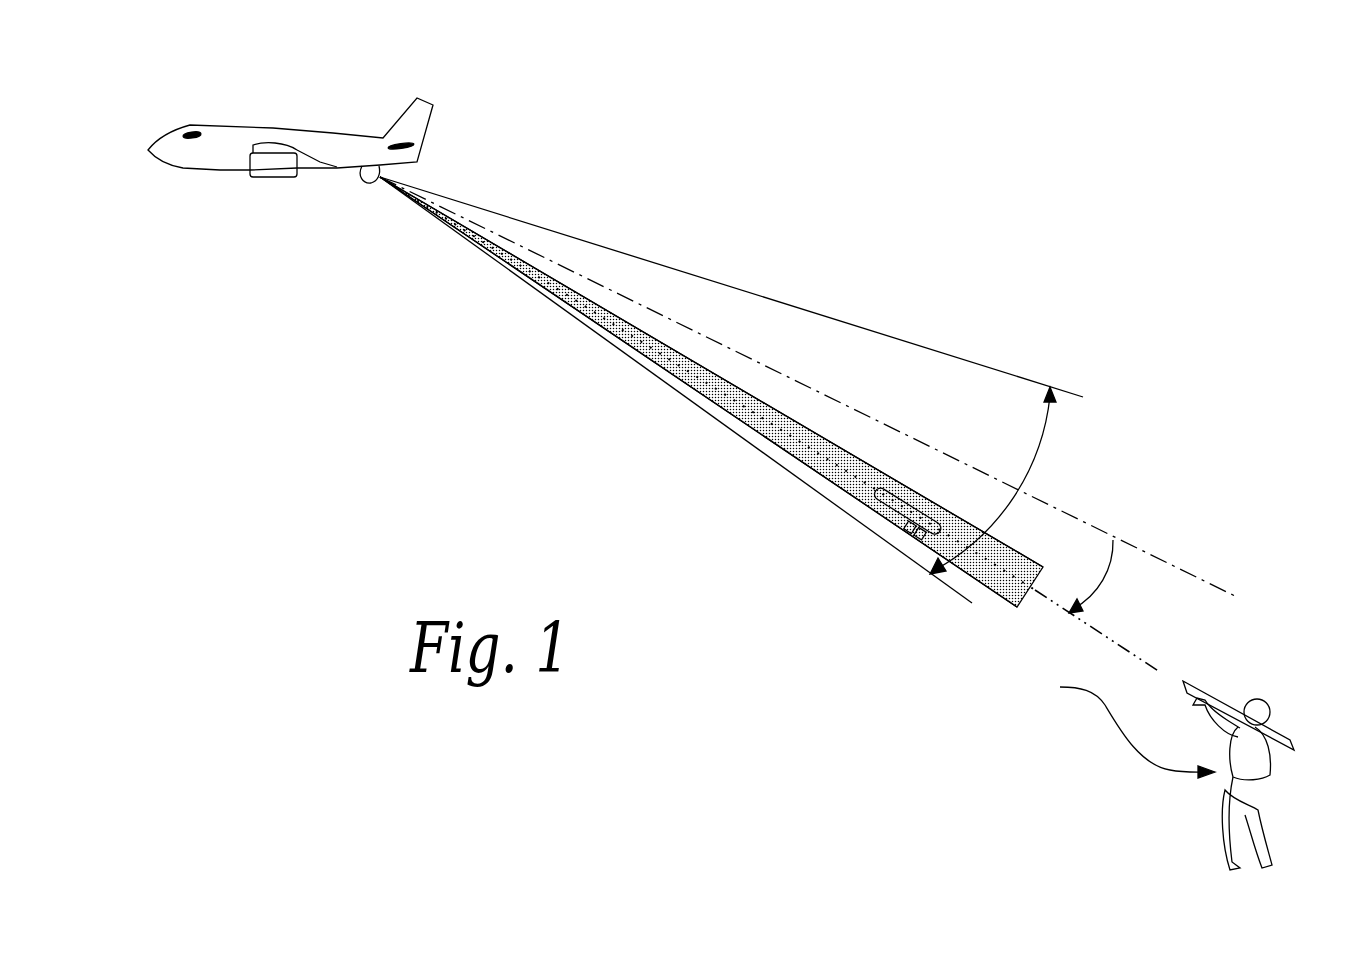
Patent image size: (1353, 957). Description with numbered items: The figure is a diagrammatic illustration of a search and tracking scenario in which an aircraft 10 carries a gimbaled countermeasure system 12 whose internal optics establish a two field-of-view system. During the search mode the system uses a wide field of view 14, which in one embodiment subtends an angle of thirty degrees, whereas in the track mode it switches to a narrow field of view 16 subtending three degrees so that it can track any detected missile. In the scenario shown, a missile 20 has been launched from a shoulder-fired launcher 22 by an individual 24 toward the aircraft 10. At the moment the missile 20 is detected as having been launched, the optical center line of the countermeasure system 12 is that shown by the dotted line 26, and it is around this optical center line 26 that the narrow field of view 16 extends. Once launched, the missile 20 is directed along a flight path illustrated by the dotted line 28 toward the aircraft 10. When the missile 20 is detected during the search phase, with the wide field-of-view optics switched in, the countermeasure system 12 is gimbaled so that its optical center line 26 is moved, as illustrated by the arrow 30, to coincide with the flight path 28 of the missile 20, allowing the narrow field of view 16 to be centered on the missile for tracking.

The aircraft 10 is at (337, 133).
The gimbaled countermeasure system 12 is at (360, 182).
The wide field of view 14 is at (1042, 442).
The narrow field of view 16 is at (730, 383).
The missile 20 is at (877, 503).
The shoulder-fired launcher 22 is at (1227, 700).
The individual 24 is at (1120, 725).
The optical center line 26 is at (1137, 543).
The flight path 28 is at (607, 320).
The arrow 30 is at (1110, 570).